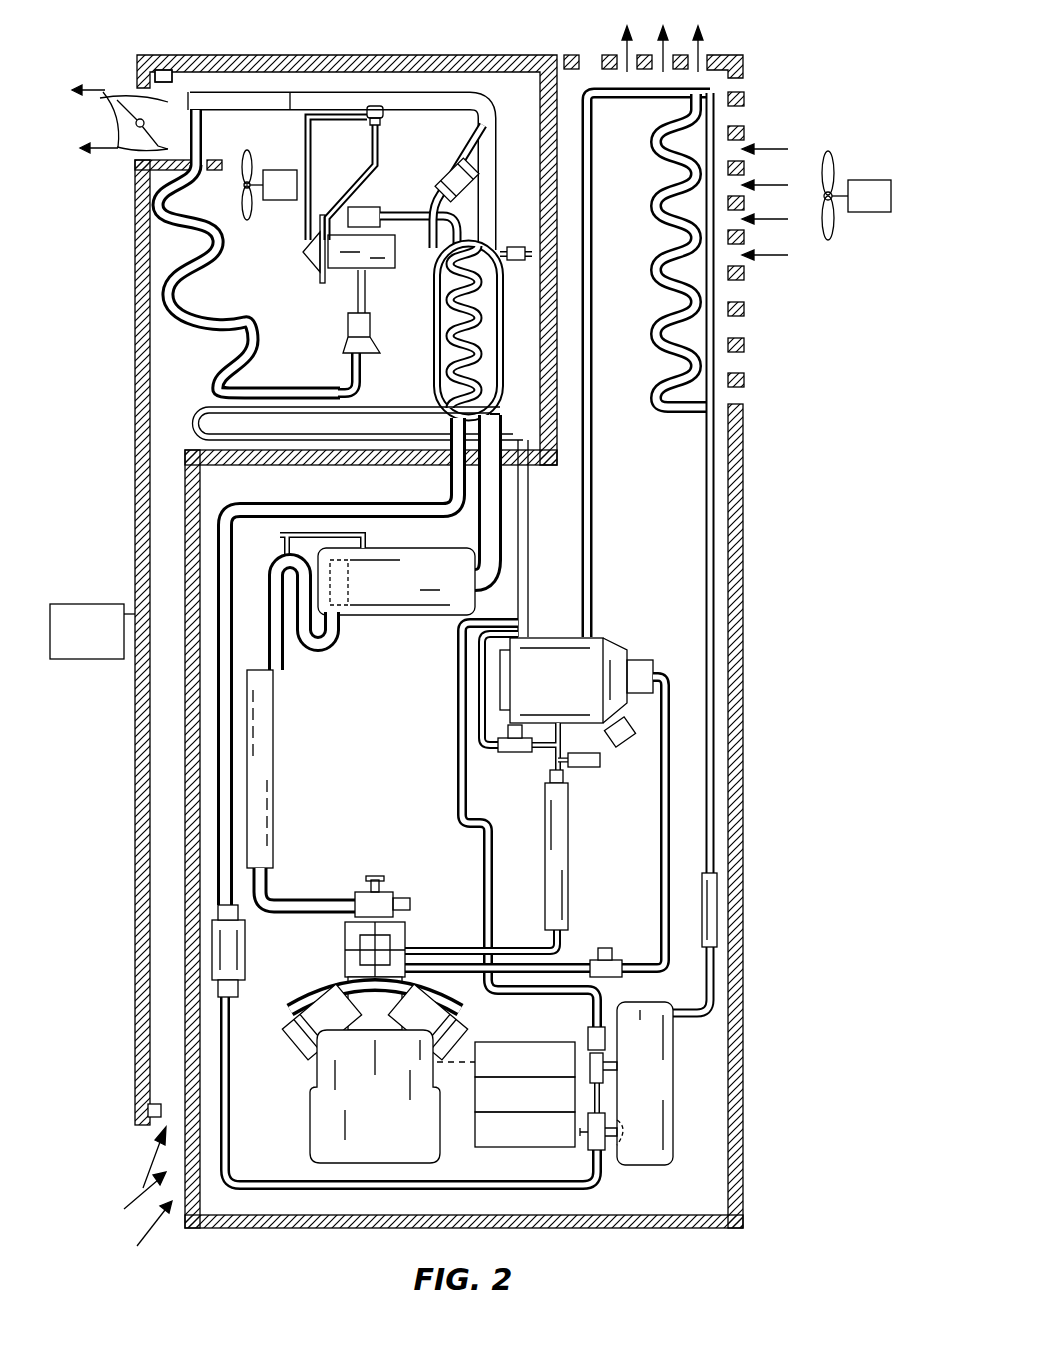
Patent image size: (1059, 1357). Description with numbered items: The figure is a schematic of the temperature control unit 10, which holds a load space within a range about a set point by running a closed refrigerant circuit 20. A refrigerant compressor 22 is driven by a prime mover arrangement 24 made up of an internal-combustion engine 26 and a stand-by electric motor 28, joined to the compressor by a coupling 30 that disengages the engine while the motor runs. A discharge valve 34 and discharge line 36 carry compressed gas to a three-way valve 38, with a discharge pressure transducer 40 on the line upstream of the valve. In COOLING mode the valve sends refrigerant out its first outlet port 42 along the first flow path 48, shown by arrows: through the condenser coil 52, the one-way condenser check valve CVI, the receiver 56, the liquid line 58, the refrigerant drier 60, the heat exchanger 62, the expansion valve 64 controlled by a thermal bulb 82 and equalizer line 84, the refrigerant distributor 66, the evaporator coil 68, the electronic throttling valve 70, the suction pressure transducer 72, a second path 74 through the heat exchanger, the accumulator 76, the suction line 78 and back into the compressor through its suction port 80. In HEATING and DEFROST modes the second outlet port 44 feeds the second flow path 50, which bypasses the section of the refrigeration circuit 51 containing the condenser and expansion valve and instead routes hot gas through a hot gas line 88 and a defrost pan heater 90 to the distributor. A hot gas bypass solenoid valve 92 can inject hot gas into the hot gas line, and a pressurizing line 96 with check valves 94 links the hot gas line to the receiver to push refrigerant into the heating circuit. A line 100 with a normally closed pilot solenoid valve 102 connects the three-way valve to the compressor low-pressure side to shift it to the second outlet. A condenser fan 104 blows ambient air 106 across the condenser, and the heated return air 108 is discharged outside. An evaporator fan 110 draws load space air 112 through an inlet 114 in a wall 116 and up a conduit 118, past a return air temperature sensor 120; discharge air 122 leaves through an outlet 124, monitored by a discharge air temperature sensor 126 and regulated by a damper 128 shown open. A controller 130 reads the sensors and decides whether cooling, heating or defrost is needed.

The temperature control unit 10 is at (804, 92).
The closed refrigerant circuit 20 is at (438, 642).
The refrigerant compressor 22 is at (371, 1126).
The prime mover arrangement 24 is at (467, 1036).
The internal-combustion engine 26 is at (510, 1147).
The stand-by electric motor 28 is at (542, 1042).
The coupling 30 is at (477, 1100).
The discharge valve 34 is at (345, 940).
The discharge line 36 is at (420, 948).
The three-way valve 38 is at (550, 681).
The discharge pressure transducer 40 is at (593, 768).
The first outlet port 42 is at (592, 636).
The second outlet port 44 is at (528, 636).
The first flow path 48 is at (508, 160).
The second flow path 50 is at (403, 357).
The section of the refrigeration circuit 51 is at (656, 548).
The condenser coil 52 is at (650, 208).
The receiver 56 is at (655, 1068).
The liquid line 58 is at (578, 1188).
The refrigerant drier 60 is at (240, 940).
The heat exchanger 62 is at (480, 350).
The expansion valve 64 is at (312, 270).
The refrigerant distributor 66 is at (348, 338).
The evaporator coil 68 is at (224, 246).
The electronic throttling valve 70 is at (452, 166).
The suction pressure transducer 72 is at (516, 247).
The second path 74 is at (480, 295).
The accumulator 76 is at (432, 578).
The suction line 78 is at (290, 894).
The suction port 80 is at (385, 891).
The thermal bulb 82 is at (333, 118).
The equalizer line 84 is at (376, 148).
The hot gas line 88 is at (528, 487).
The defrost pan heater 90 is at (212, 407).
The hot gas bypass solenoid valve 92 is at (517, 753).
The check valves 94 is at (605, 1078).
The pressurizing line 96 is at (462, 775).
The line 100 is at (663, 864).
The pilot solenoid valve 102 is at (607, 947).
The condenser fan 104 is at (872, 213).
The ambient air 106 is at (773, 220).
The return air 108 is at (698, 42).
The evaporator fan 110 is at (285, 200).
The load space air 112 is at (125, 1190).
The inlet 114 is at (134, 1232).
The wall 116 is at (135, 1046).
The conduit 118 is at (158, 904).
The return air temperature sensor 120 is at (148, 1108).
The discharge air 122 is at (117, 118).
The outlet 124 is at (125, 85).
The discharge air temperature sensor 126 is at (166, 70).
The damper 128 is at (158, 138).
The controller 130 is at (72, 643).
The one-way condenser check valve CVI is at (717, 894).